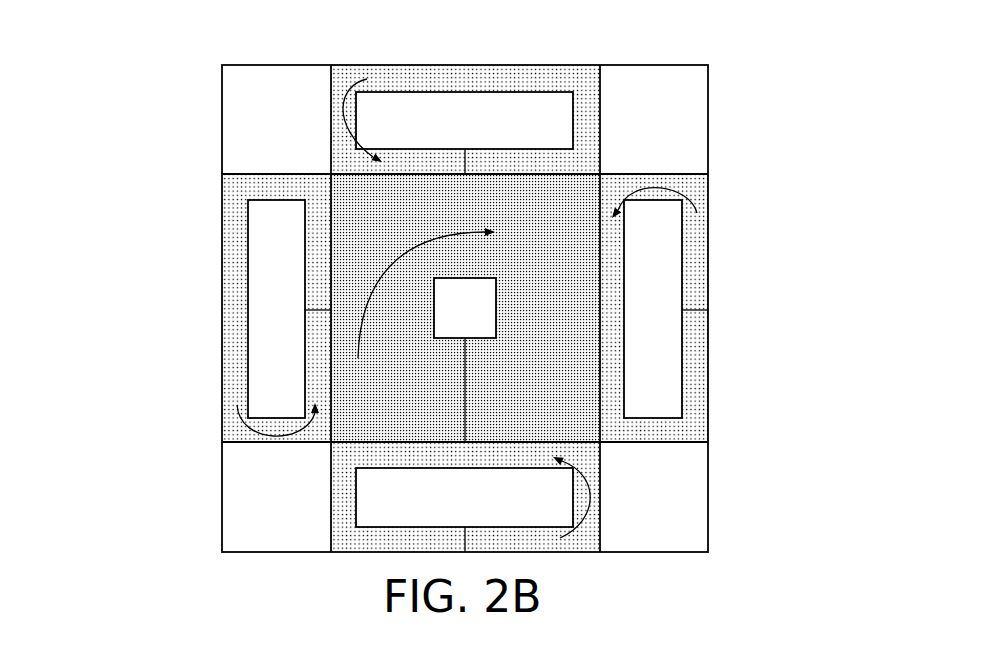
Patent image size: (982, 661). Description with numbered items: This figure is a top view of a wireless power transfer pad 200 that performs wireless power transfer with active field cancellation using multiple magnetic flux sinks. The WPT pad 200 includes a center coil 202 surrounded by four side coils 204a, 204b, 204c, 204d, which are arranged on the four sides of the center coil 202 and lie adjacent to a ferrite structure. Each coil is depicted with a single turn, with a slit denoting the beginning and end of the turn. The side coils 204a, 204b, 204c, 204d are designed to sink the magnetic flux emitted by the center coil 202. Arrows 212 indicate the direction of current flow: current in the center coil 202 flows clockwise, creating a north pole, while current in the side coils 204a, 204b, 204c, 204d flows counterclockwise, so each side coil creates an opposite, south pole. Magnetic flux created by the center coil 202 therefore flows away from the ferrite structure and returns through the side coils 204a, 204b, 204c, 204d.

The wireless power transfer pad 200 is at (222, 32).
The center coil 202 is at (465, 308).
The side coil 204a is at (222, 316).
The side coil 204b is at (472, 65).
The side coil 204c is at (708, 310).
The side coil 204d is at (540, 541).
The arrows 212 is at (338, 139).